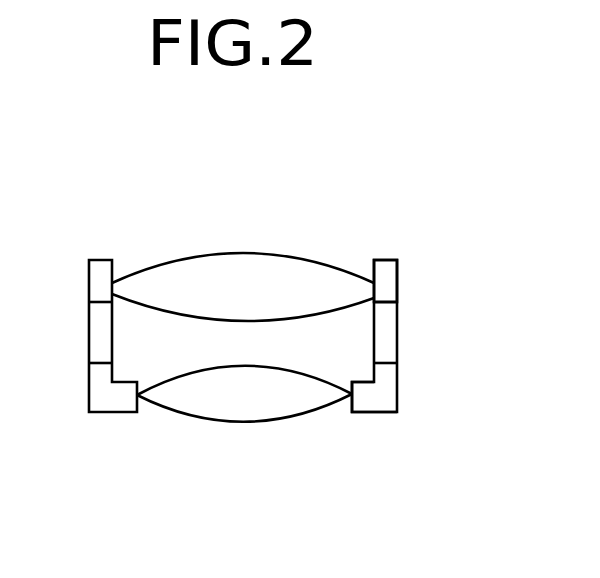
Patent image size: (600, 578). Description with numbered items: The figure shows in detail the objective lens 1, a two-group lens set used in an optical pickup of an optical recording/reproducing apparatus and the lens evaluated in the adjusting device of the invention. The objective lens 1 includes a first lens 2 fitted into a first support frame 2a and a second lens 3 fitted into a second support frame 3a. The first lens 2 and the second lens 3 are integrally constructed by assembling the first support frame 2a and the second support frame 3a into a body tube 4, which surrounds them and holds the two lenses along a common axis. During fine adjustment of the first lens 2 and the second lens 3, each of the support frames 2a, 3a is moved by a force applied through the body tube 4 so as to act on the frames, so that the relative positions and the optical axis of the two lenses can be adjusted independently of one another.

The objective lens 1 is at (483, 107).
The first lens 2 is at (262, 252).
The first support frame 2a is at (387, 283).
The second lens 3 is at (162, 410).
The second support frame 3a is at (387, 400).
The body tube 4 is at (398, 338).